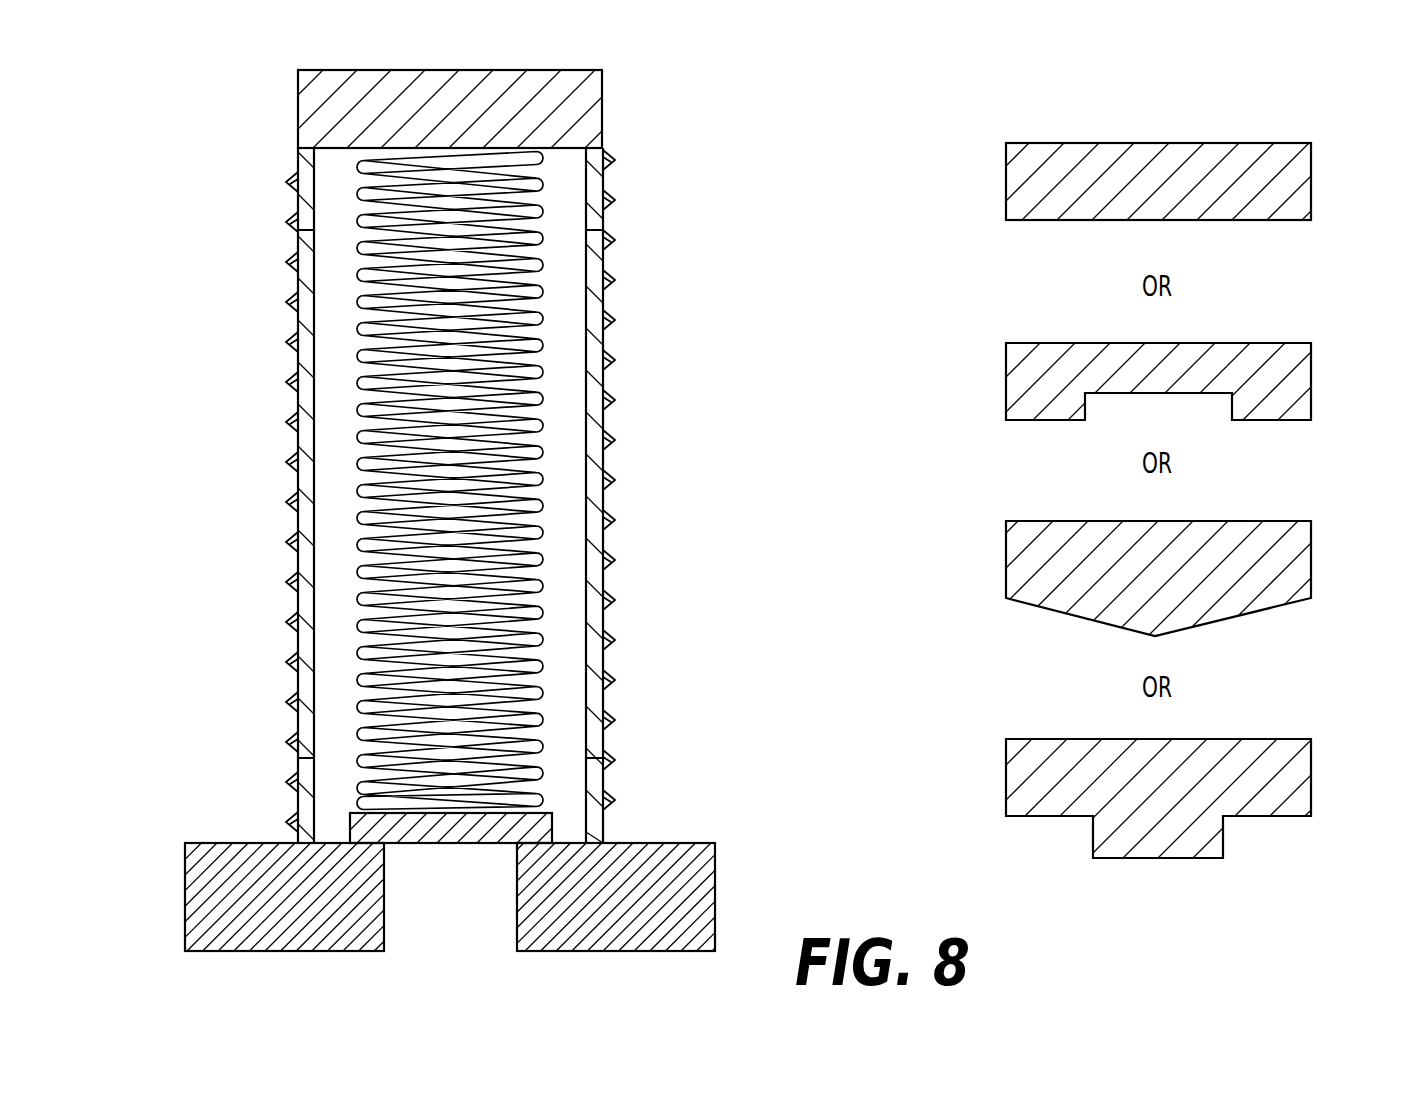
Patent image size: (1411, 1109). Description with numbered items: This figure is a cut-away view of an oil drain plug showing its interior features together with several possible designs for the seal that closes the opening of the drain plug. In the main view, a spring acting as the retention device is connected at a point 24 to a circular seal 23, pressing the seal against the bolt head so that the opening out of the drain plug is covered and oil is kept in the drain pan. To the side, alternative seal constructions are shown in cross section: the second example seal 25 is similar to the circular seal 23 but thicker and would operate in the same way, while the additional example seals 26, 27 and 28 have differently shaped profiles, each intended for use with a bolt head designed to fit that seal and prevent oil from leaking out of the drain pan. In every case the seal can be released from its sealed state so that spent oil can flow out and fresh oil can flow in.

The circular seal 23 is at (553, 833).
The connection point 24 is at (373, 813).
The second example seal 25 is at (1302, 166).
The example seal 26 is at (1300, 380).
The example seal 27 is at (1302, 563).
The example seal 28 is at (1302, 773).